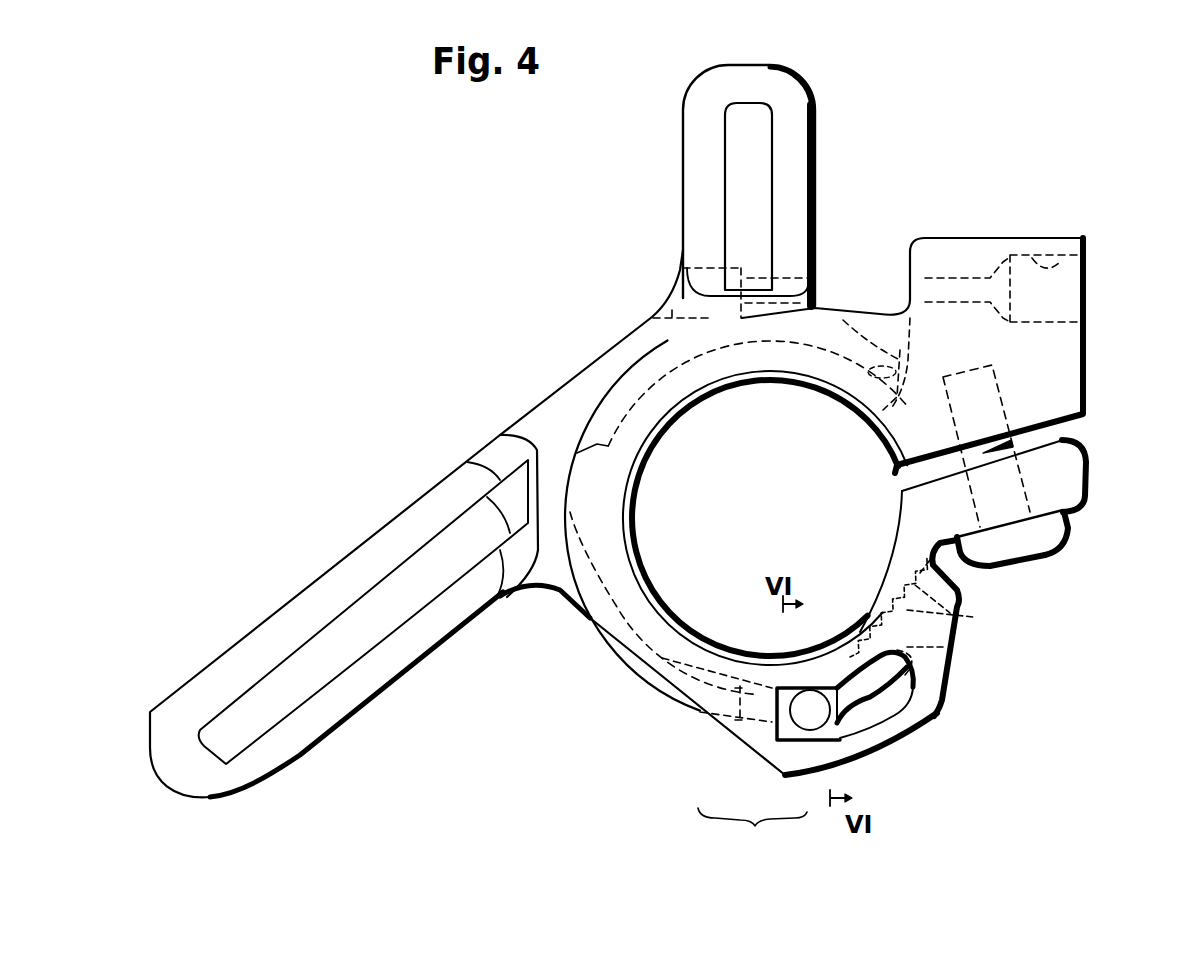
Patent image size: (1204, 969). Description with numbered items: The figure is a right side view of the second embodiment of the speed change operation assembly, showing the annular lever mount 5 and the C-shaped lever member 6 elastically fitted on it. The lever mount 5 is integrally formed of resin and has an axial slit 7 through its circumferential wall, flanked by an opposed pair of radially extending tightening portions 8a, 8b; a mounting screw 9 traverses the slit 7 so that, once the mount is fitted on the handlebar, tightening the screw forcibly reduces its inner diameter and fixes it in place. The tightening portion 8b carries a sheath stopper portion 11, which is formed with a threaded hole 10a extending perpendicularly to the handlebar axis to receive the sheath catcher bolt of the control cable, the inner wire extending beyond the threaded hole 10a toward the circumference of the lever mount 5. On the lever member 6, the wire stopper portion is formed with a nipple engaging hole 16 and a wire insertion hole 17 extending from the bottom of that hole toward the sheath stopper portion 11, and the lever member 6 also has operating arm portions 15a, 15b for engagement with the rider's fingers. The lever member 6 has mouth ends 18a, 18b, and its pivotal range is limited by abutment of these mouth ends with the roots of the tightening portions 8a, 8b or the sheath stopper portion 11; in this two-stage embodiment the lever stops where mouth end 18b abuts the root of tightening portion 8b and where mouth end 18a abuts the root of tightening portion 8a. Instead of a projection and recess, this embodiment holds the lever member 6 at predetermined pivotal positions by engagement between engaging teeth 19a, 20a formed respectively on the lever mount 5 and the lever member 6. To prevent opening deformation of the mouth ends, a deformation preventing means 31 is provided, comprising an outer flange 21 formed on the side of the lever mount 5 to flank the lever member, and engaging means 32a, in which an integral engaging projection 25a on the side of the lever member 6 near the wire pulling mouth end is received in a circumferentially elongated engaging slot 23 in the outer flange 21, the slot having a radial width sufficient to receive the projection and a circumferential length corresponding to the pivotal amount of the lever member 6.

The lever mount 5 is at (713, 735).
The lever member 6 is at (613, 667).
The axial slit 7 is at (1066, 433).
The tightening portion 8a is at (1088, 495).
The tightening portion 8b is at (1090, 393).
The mounting screw 9 is at (1053, 557).
The bolt hole 10a is at (1060, 252).
The sheath stopper portion 11 is at (970, 238).
The operating arm portion 15a is at (318, 747).
The operating arm portion 15b is at (765, 64).
The nipple engaging hole 16 is at (670, 300).
The wire insertion hole 17 is at (817, 254).
The mouth end 18a is at (955, 660).
The mouth end 18b is at (880, 410).
The engaging teeth 19a is at (920, 618).
The engaging teeth 20a is at (863, 630).
The outer flange 21 is at (590, 613).
The engaging slot 23 is at (822, 728).
The engaging projection 25a is at (806, 714).
The deformation preventing means 31 is at (880, 767).
The engaging means 32a is at (752, 834).